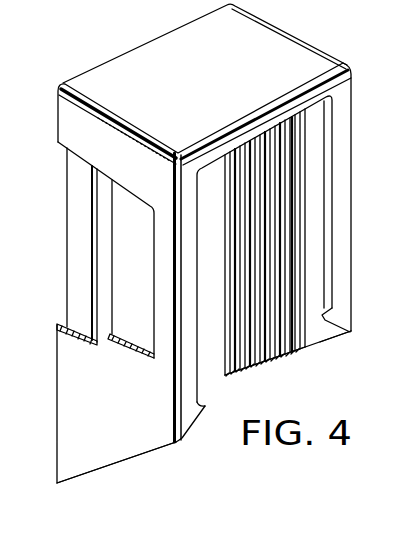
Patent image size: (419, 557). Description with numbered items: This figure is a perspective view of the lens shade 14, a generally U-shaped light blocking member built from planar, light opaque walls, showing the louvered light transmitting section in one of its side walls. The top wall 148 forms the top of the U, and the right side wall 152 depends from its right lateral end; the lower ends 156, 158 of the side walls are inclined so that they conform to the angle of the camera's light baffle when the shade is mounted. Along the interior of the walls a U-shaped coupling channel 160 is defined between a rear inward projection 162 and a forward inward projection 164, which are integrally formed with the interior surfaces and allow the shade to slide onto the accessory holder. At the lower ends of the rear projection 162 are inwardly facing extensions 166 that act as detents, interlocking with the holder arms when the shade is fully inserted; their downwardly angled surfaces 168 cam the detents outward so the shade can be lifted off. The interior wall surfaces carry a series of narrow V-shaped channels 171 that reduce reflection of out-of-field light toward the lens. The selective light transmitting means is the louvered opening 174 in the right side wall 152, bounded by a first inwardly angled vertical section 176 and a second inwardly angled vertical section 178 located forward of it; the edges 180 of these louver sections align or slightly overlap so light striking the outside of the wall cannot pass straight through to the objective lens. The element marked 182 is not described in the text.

The lens shade 14 is at (353, 58).
The top wall 148 is at (338, 24).
The right side wall 152 is at (76, 441).
The lower end of left side wall 156 is at (272, 359).
The lower end of right side wall 158 is at (133, 462).
The coupling channel 160 is at (320, 337).
The rear inward projection 162 is at (329, 278).
The forward inward projection 164 is at (297, 236).
The inwardly facing extension 166 is at (204, 418).
The downwardly angled surface 168 is at (199, 403).
The V-shaped channels 171 is at (270, 268).
The louvered opening 174 is at (92, 186).
The first inwardly angled vertical section 176 is at (126, 209).
The second inwardly angled vertical section 178 is at (77, 207).
The edge of louver section 180 is at (109, 263).
The lip 182 is at (92, 305).